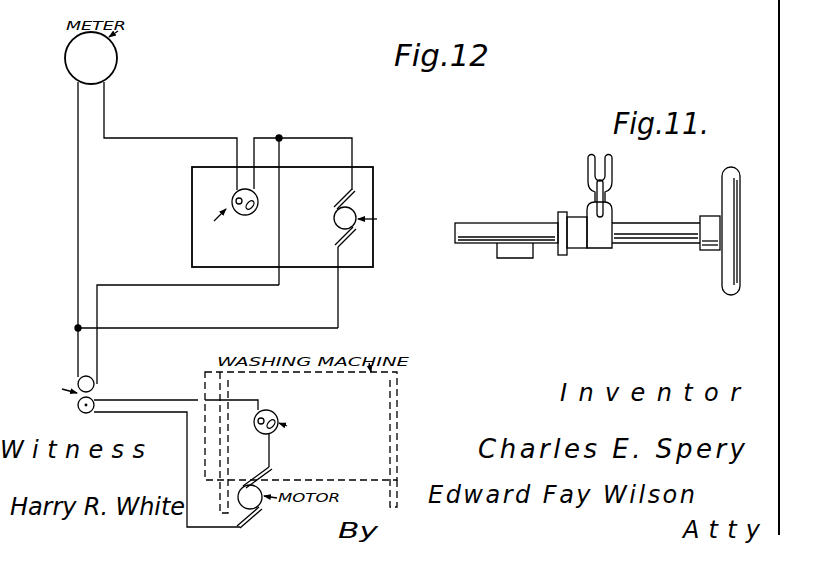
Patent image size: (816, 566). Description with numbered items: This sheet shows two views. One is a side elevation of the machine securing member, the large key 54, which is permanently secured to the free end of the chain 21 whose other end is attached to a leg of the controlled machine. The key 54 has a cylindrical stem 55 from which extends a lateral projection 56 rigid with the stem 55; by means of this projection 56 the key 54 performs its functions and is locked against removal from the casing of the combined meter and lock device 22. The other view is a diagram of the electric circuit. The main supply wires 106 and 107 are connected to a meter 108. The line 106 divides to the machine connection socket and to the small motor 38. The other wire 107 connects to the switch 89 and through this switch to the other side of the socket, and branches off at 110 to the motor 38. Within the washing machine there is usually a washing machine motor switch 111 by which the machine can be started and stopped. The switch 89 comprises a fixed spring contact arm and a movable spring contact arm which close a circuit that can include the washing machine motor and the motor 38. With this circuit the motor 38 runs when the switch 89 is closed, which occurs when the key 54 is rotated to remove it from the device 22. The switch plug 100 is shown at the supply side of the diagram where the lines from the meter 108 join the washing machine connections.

In FIG. 12, the meter 108 is at (117, 51).
In FIG. 12, the main supply wire 106 is at (78, 105).
In FIG. 12, the main supply wire 107 is at (105, 101).
In FIG. 12, the branch 110 is at (354, 153).
In FIG. 12, the switch 89 is at (232, 202).
In FIG. 12, the motor 38 is at (357, 213).
In FIG. 12, the combined meter and lock device 22 is at (374, 256).
In FIG. 12, the switch plug 100 is at (77, 381).
In FIG. 12, the washing machine motor switch 111 is at (274, 412).
In FIG. 11, the cylindrical stem 55 is at (549, 222).
In FIG. 11, the chain 21 is at (612, 182).
In FIG. 11, the key 54 is at (676, 245).
In FIG. 11, the lateral projection 56 is at (521, 252).